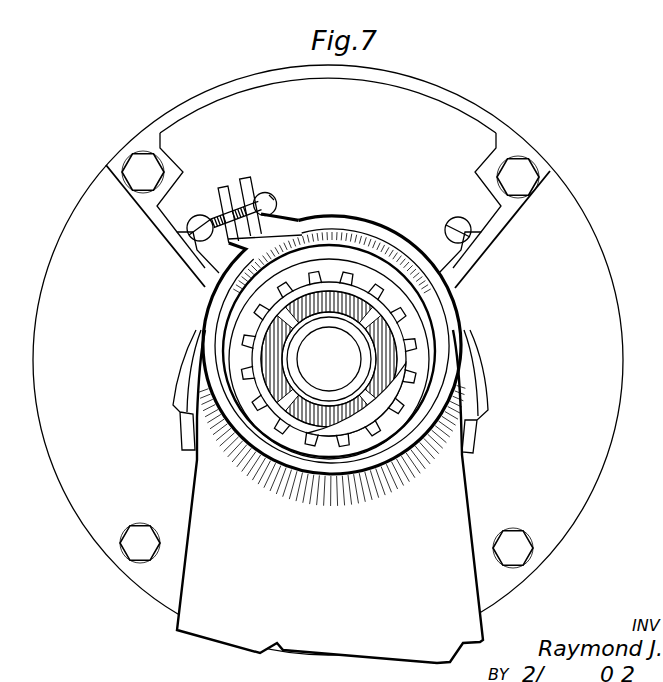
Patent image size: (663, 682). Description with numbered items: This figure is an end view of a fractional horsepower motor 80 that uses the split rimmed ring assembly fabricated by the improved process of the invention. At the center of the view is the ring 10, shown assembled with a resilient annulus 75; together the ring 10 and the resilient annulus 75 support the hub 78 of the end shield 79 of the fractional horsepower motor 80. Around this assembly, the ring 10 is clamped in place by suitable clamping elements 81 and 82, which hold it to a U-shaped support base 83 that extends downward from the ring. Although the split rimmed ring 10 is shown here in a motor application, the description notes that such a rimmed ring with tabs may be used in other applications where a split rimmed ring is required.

The ring 10 is at (383, 238).
The resilient annulus 75 is at (415, 326).
The hub 78 is at (365, 287).
The end shield 79 is at (583, 246).
The fractional horsepower motor 80 is at (496, 112).
The clamping element 81 is at (200, 305).
The clamping element 82 is at (465, 302).
The U-shaped support base 83 is at (470, 511).